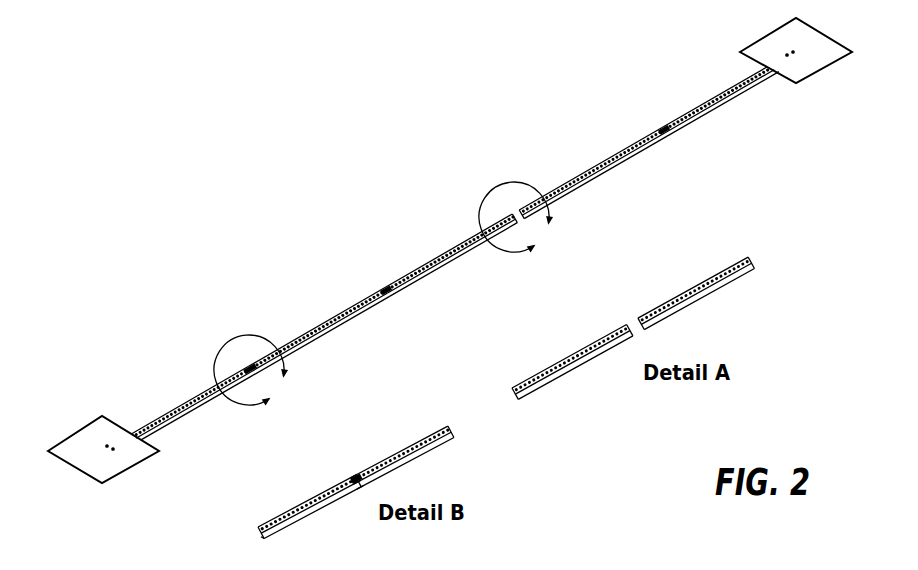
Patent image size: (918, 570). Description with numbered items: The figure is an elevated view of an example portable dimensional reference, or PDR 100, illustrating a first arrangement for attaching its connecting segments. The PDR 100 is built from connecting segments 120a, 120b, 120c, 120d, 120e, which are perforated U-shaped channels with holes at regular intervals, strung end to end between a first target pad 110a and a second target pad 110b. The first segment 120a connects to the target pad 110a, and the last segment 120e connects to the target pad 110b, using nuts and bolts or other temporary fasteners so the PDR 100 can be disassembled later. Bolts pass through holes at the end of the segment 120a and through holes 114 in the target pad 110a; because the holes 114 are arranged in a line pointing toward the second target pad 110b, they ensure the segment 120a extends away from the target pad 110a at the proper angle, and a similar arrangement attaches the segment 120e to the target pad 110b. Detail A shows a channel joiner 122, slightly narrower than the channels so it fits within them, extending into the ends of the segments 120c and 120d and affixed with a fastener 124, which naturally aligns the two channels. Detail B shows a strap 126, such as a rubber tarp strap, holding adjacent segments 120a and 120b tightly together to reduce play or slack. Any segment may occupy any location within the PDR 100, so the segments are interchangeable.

The portable dimensional reference (PDR) 100 is at (283, 184).
The first target pad 110a is at (96, 437).
The second target pad 110b is at (778, 49).
The holes in target pad 114 is at (118, 459).
The first connecting segment 120a is at (247, 451).
The connecting segment 120b is at (351, 387).
The connecting segment 120c is at (508, 306).
The connecting segment 120d is at (636, 227).
The last connecting segment 120e is at (715, 99).
The channel joiner 122 is at (643, 312).
The fastener 124 is at (657, 305).
The strap 126 is at (358, 478).